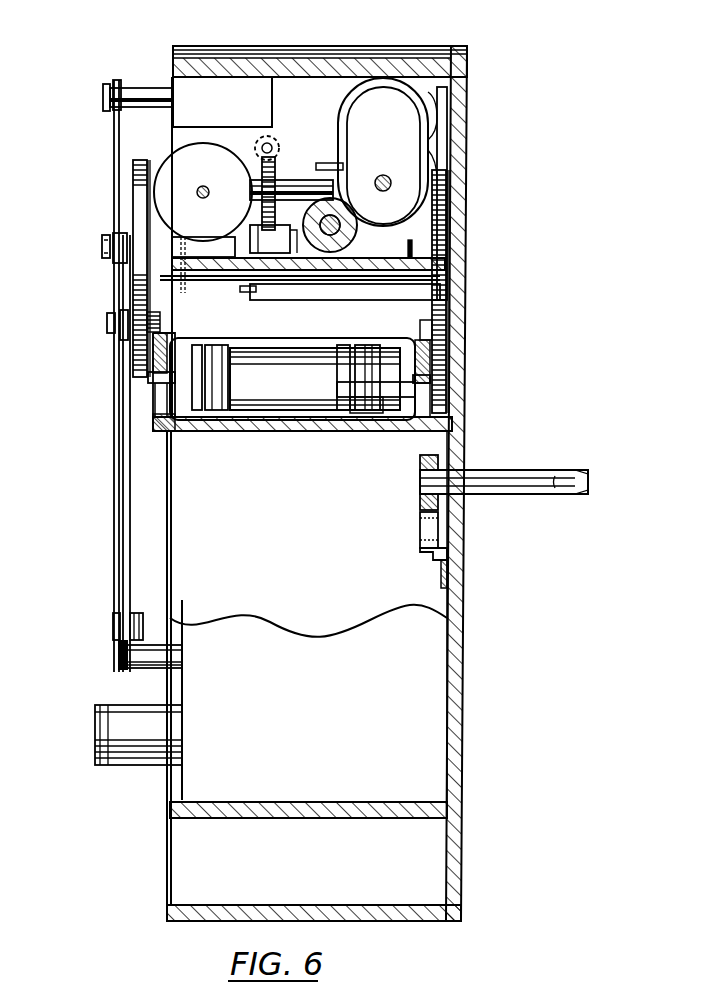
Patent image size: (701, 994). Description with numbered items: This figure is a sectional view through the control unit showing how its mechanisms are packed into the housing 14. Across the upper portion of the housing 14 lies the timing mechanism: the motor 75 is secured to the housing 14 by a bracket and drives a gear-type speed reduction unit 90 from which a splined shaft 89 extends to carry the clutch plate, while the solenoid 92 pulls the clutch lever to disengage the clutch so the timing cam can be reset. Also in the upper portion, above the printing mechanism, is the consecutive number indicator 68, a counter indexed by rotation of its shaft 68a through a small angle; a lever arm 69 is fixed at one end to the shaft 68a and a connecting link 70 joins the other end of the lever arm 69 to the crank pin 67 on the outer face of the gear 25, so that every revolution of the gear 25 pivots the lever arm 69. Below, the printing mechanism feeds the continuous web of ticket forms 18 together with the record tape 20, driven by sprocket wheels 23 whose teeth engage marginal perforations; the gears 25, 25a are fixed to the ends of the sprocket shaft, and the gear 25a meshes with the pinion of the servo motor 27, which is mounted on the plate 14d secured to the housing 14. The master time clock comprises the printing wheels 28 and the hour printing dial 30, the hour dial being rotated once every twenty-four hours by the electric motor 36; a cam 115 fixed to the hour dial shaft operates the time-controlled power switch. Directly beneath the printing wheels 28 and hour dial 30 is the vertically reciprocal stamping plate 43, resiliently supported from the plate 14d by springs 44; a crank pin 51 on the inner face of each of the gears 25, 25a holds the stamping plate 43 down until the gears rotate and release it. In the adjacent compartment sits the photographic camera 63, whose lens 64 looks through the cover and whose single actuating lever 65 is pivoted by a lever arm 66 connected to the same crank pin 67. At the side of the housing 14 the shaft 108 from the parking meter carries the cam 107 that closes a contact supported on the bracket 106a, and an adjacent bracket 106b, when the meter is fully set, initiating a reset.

The housing 14 is at (334, 48).
The plate 14d is at (236, 431).
The ticket forms 18 is at (308, 284).
The record tape 20 is at (378, 296).
The sprocket wheels 23 is at (130, 212).
The gear 25 is at (137, 177).
The gear 25a is at (445, 355).
The servo motor 27 is at (294, 390).
The printing wheels 28 is at (247, 290).
The hour printing dial 30 is at (418, 236).
The electric motor 36 is at (216, 176).
The stamping plate 43 is at (290, 338).
The springs 44 is at (195, 400).
The crank pin 51 is at (130, 292).
The photographic camera 63 is at (317, 708).
The lens 64 is at (95, 724).
The actuating lever 65 is at (124, 652).
The lever arm 66 is at (124, 515).
The crank pin 67 is at (122, 322).
The consecutive number indicator 68 is at (222, 108).
The shaft 68a is at (152, 88).
The lever arm 69 is at (112, 151).
The connecting link 70 is at (117, 277).
The motor 75 is at (441, 106).
The shaft 89 is at (392, 178).
The speed reduction unit 90 is at (440, 130).
The solenoid 92 is at (440, 218).
The bracket 106a is at (448, 555).
The bracket 106b is at (433, 535).
The cam 107 is at (448, 500).
The shaft 108 is at (490, 470).
The cam 115 is at (330, 163).